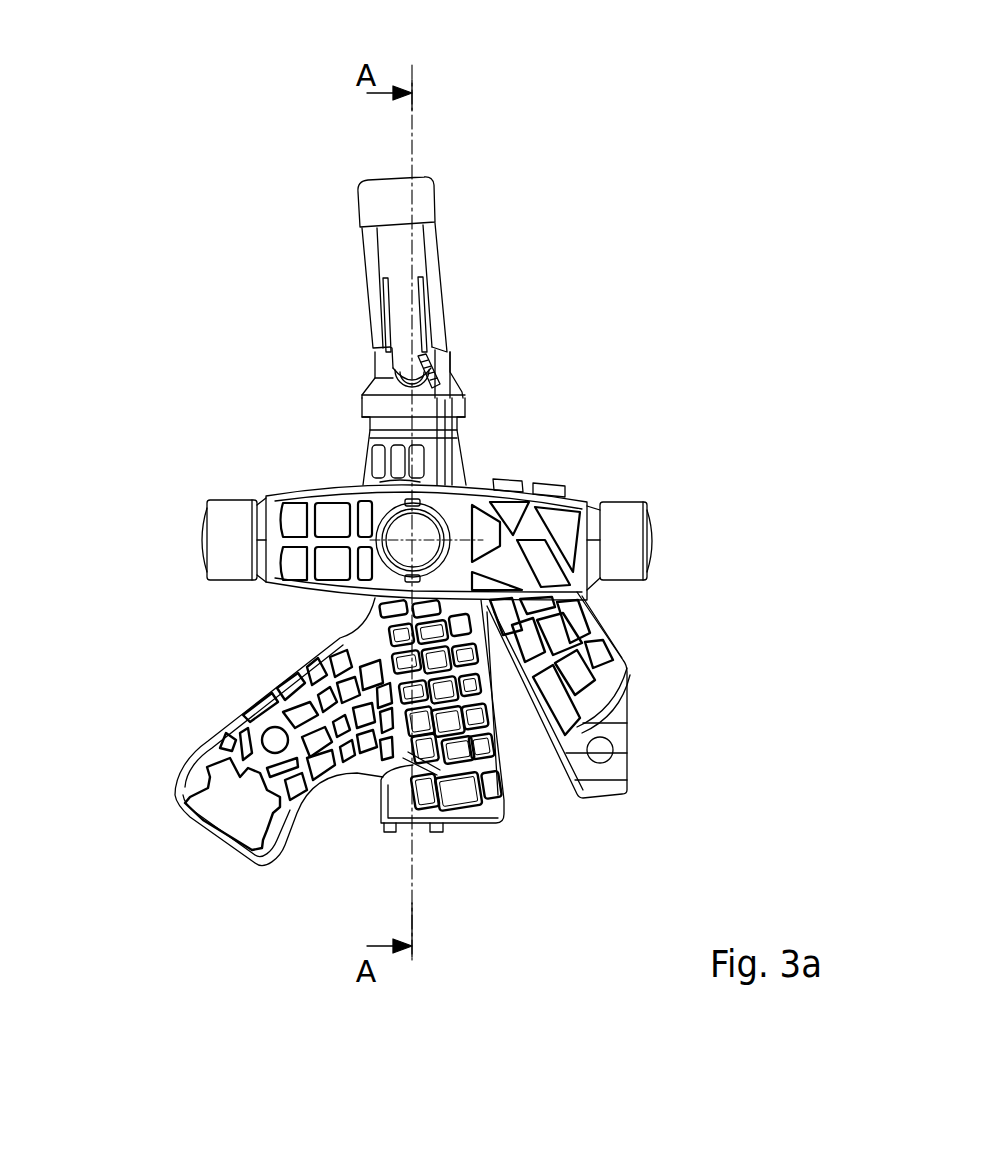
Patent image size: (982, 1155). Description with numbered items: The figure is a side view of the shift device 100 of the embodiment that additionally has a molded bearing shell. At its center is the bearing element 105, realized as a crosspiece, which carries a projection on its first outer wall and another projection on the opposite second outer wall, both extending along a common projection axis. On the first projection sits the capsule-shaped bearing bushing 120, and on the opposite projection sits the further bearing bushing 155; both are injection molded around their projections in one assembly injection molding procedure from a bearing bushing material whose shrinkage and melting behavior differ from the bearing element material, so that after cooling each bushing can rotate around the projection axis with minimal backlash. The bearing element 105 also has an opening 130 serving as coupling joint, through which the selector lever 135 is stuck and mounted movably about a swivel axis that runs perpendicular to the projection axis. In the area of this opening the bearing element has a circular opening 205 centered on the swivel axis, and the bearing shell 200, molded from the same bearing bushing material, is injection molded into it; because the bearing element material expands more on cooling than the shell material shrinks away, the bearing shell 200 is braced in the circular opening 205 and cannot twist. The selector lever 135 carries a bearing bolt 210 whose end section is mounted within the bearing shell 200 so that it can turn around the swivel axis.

The shift device 100 is at (262, 228).
The bearing element 105 is at (627, 687).
The bearing bushing 120 is at (228, 512).
The opening 130 is at (351, 472).
The selector lever 135 is at (425, 202).
The further bearing bushing 155 is at (624, 511).
The bearing shell 200 is at (448, 533).
The circular opening 205 is at (440, 512).
The bearing bolt 210 is at (420, 548).